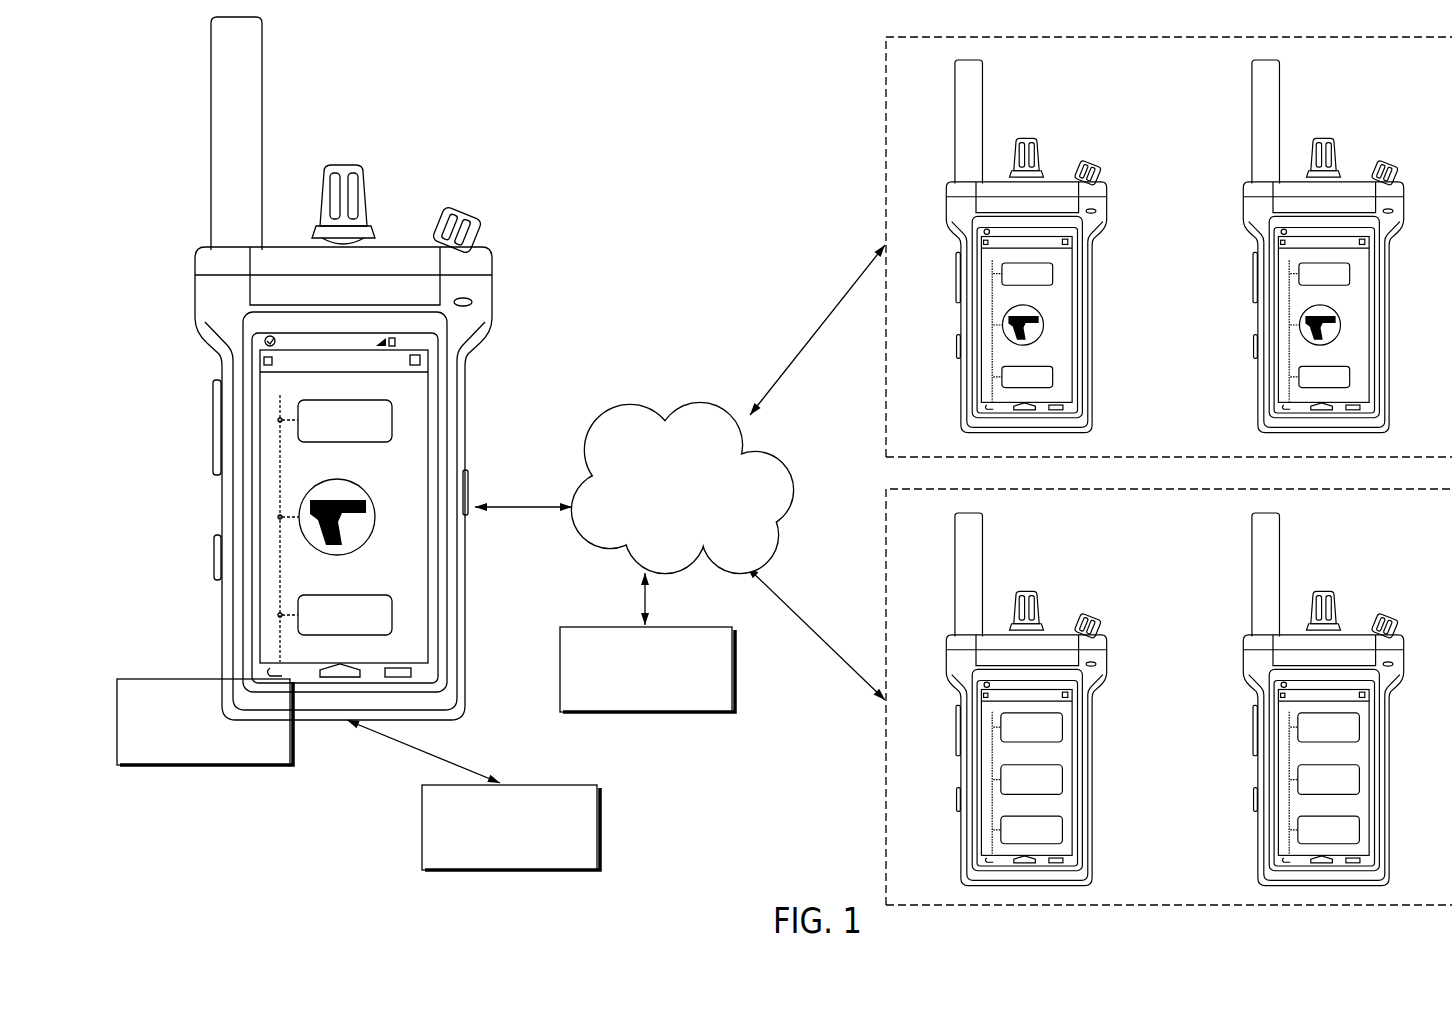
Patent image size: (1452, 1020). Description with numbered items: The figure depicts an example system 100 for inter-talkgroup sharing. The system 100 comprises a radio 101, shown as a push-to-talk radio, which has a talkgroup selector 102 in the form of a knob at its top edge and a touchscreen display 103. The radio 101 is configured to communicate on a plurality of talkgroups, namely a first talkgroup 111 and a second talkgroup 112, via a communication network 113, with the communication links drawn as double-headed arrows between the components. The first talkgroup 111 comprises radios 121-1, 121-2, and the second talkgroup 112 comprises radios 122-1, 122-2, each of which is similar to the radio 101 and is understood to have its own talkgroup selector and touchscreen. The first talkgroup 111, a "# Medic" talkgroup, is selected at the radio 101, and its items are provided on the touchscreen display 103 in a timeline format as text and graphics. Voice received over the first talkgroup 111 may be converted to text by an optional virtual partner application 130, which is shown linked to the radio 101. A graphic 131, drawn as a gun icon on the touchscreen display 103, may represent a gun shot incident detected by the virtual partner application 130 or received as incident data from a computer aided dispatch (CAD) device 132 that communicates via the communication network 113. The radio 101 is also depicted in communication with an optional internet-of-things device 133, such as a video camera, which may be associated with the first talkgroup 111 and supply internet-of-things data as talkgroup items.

The system 100 is at (171, 64).
The radio 101 is at (458, 712).
The talkgroup selector 102 is at (362, 170).
The touchscreen display 103 is at (270, 552).
The first talkgroup 111 is at (884, 148).
The second talkgroup 112 is at (884, 801).
The communication network 113 is at (598, 425).
The radio 121-1 is at (1105, 385).
The radio 121-2 is at (1250, 337).
The radio 122-1 is at (1106, 838).
The radio 122-2 is at (1252, 790).
The virtual partner application 130 is at (203, 767).
The graphic 131 is at (353, 482).
The computer aided dispatch (CAD) device 132 is at (560, 669).
The internet-of-things device 133 is at (421, 826).